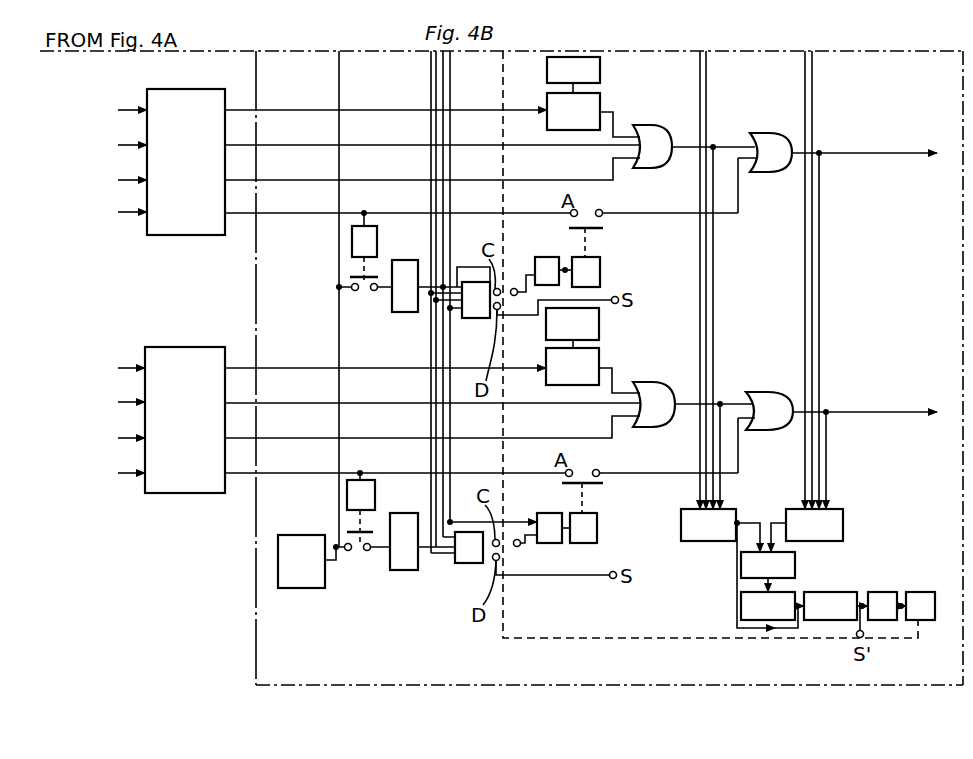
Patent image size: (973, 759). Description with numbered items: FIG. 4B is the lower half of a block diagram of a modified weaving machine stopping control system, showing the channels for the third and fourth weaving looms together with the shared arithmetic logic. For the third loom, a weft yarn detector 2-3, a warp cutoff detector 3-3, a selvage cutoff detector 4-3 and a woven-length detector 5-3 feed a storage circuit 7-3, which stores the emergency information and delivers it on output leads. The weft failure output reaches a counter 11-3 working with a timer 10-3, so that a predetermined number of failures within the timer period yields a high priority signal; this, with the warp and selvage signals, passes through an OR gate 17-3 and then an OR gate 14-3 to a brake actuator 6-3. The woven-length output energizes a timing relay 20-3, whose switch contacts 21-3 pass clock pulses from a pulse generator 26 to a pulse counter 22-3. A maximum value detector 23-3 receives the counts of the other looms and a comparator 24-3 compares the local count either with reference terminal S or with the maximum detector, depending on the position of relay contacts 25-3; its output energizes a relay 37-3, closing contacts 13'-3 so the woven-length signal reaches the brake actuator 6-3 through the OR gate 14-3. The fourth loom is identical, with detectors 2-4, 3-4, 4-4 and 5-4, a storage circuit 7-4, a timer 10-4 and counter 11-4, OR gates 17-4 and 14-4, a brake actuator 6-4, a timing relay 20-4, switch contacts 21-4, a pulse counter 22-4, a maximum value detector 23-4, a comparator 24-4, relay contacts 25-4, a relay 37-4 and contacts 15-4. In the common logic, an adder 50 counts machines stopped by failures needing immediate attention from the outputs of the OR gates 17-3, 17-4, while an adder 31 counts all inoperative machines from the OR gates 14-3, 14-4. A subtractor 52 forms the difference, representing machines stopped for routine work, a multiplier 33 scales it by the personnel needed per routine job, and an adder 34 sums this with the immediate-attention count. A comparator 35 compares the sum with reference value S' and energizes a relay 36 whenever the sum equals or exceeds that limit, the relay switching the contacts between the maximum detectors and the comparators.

The weft yarn detector 2-3 is at (106, 111).
The warp cutoff detector 3-3 is at (106, 146).
The selvage cutoff detector 4-3 is at (106, 181).
The woven-length detector 5-3 is at (106, 213).
The storage circuit 7-3 is at (186, 162).
The timer 10-3 is at (573, 75).
The counter 11-3 is at (593, 115).
The OR gate 17-3 is at (649, 125).
The OR gate 14-3 is at (769, 132).
The brake actuator 6-3 is at (864, 137).
The contacts 13'-3 is at (614, 234).
The timing relay 20-3 is at (377, 234).
The switch contacts 21-3 is at (364, 302).
The pulse counter 22-3 is at (404, 313).
The maximum value detector 23-3 is at (474, 318).
The comparator 24-3 is at (546, 257).
The relay 37-3 is at (600, 270).
The relay contacts 25-3 is at (501, 309).
The timer 10-4 is at (572, 324).
The counter 11-4 is at (593, 366).
The weft yarn detector 2-4 is at (105, 369).
The warp cutoff detector 3-4 is at (105, 403).
The selvage cutoff detector 4-4 is at (105, 439).
The woven-length detector 5-4 is at (105, 474).
The storage circuit 7-4 is at (185, 420).
The OR gate 17-4 is at (653, 381).
The OR gate 14-4 is at (765, 392).
The brake actuator 6-4 is at (865, 400).
The NOR gate 15-4 is at (605, 492).
The timing relay 20-4 is at (375, 492).
The switch contacts 21-4 is at (361, 562).
The pulse generator 26 is at (299, 589).
The pulse counter 22-4 is at (404, 571).
The maximum value detector 23-4 is at (471, 564).
The relay contacts 25-4 is at (518, 548).
The comparator 24-4 is at (549, 513).
The relay 37-4 is at (597, 529).
The adder 50 is at (700, 541).
The adder 31 is at (843, 518).
The subtractor 52 is at (795, 567).
The multiplier 33 is at (741, 607).
The adder 34 is at (858, 578).
The comparator 35 is at (884, 592).
The relay 36 is at (921, 592).